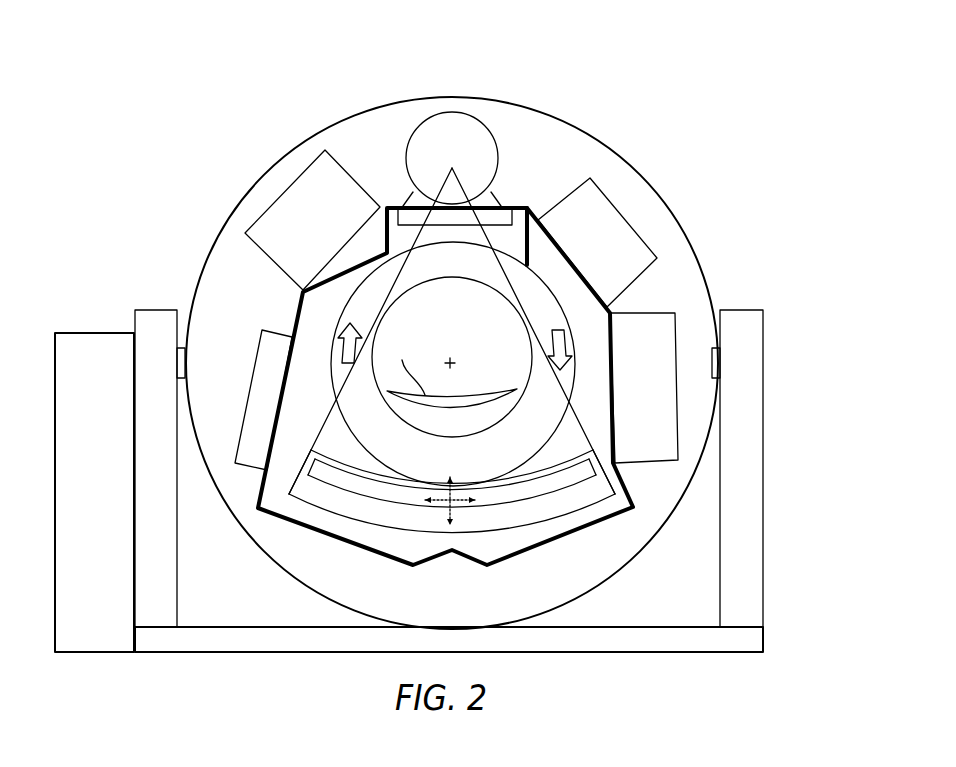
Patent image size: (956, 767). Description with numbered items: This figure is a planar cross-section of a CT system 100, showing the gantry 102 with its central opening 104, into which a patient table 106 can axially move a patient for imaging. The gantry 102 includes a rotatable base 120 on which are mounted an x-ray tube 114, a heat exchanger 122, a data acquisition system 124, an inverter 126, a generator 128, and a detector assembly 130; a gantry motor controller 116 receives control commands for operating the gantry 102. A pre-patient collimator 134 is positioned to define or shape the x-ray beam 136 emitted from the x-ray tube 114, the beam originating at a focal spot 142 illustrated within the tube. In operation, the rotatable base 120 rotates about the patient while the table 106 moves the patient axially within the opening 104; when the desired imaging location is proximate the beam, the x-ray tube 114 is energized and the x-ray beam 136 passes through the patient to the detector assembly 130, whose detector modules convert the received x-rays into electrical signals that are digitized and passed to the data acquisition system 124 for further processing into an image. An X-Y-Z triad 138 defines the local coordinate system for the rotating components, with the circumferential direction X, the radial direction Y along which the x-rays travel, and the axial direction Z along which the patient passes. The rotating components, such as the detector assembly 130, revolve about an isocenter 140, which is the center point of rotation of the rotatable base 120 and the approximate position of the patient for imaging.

The CT system 100 is at (642, 103).
The gantry 102 is at (214, 245).
The opening 104 is at (492, 332).
The patient table 106 is at (400, 409).
The x-ray tube 114 is at (452, 111).
The gantry motor controller 116 is at (72, 333).
The rotatable base 120 is at (280, 498).
The heat exchanger 122 is at (262, 212).
The data acquisition system 124 is at (255, 362).
The inverter 126 is at (625, 216).
The generator 128 is at (658, 313).
The detector assembly 130 is at (565, 503).
The pre-patient collimator 134 is at (387, 207).
The x-ray beam 136 is at (574, 434).
The X-Y-Z triad 138 is at (428, 520).
The isocenter 140 is at (450, 358).
The focal spot 142 is at (453, 167).